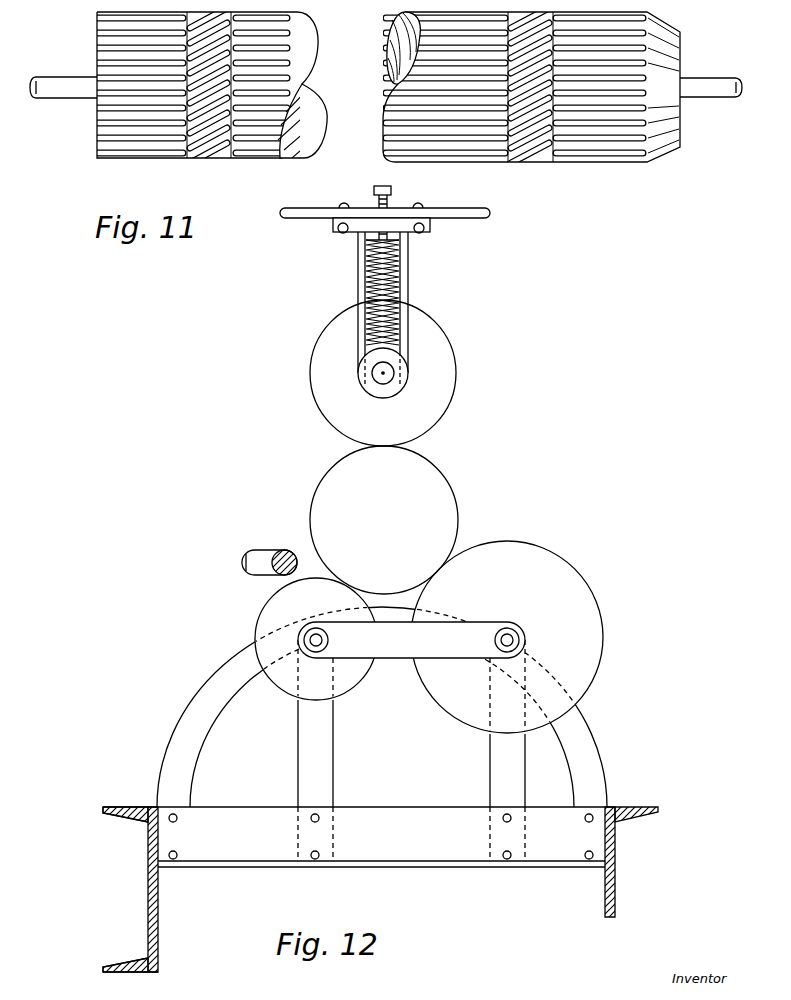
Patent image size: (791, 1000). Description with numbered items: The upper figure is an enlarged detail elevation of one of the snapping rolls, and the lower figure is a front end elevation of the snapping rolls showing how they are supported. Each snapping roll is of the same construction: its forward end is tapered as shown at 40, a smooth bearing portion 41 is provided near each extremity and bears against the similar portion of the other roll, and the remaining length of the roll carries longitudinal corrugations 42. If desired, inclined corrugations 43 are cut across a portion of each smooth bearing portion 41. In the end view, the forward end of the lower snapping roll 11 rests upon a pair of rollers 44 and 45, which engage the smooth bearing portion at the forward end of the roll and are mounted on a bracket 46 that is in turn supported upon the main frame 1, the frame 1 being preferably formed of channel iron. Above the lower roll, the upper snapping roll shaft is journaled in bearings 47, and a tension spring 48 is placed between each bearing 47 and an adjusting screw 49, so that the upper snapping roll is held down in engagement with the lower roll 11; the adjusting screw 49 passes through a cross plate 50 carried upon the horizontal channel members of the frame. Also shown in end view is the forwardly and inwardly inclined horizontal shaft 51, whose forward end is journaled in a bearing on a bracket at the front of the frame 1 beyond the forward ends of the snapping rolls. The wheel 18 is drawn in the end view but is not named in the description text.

In FIG. 12, the frame 1 is at (148, 895).
In FIG. 12, the snapping roll 11 is at (449, 501).
In FIG. 12, the wheel 18 is at (456, 370).
In FIG. 11, the tapered forward end 40 is at (677, 125).
In FIG. 11, the smooth bearing portion 41 is at (187, 154).
In FIG. 11, the longitudinal corrugations 42 is at (152, 148).
In FIG. 11, the inclined corrugations 43 is at (218, 140).
In FIG. 12, the roller 44 is at (272, 611).
In FIG. 12, the roller 45 is at (565, 573).
In FIG. 12, the bracket 46 is at (400, 653).
In FIG. 12, the bearing 47 is at (390, 392).
In FIG. 12, the tension spring 48 is at (392, 285).
In FIG. 12, the adjusting screw 49 is at (386, 187).
In FIG. 12, the cross plate 50 is at (456, 213).
In FIG. 12, the inclined horizontal shaft 51 is at (263, 552).